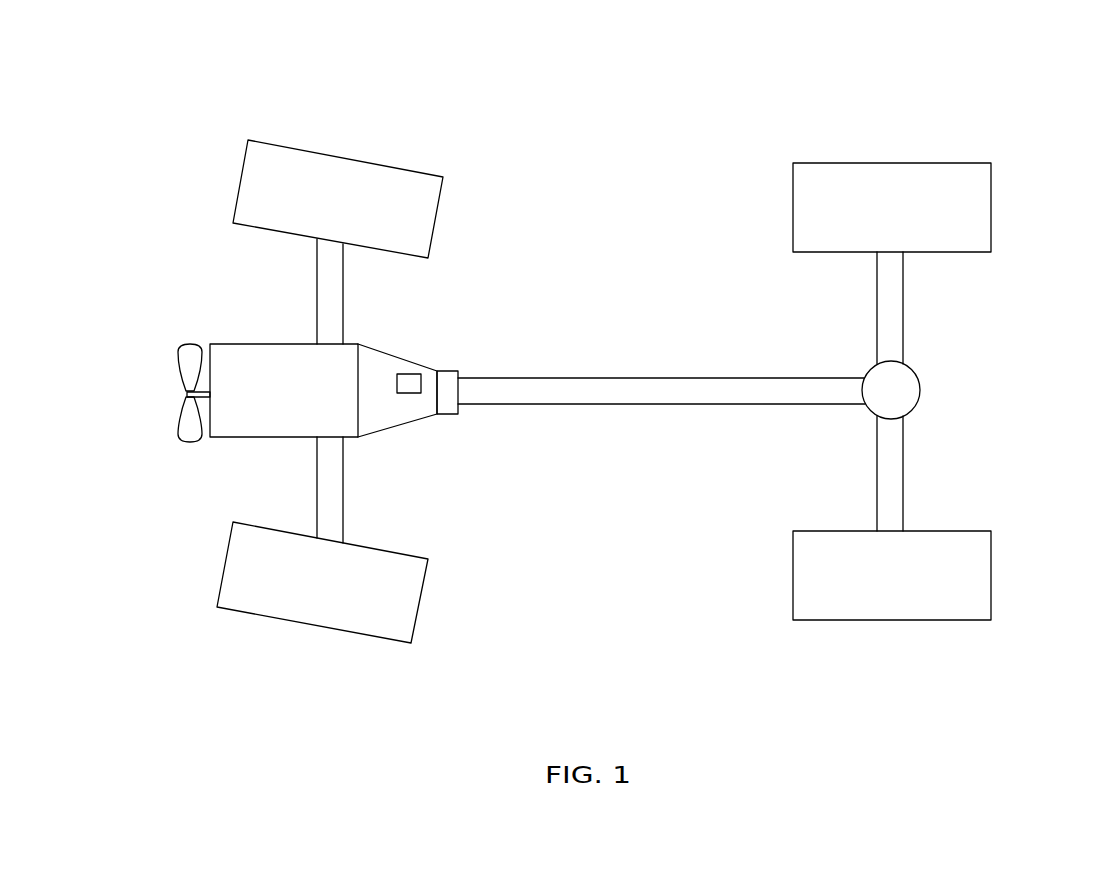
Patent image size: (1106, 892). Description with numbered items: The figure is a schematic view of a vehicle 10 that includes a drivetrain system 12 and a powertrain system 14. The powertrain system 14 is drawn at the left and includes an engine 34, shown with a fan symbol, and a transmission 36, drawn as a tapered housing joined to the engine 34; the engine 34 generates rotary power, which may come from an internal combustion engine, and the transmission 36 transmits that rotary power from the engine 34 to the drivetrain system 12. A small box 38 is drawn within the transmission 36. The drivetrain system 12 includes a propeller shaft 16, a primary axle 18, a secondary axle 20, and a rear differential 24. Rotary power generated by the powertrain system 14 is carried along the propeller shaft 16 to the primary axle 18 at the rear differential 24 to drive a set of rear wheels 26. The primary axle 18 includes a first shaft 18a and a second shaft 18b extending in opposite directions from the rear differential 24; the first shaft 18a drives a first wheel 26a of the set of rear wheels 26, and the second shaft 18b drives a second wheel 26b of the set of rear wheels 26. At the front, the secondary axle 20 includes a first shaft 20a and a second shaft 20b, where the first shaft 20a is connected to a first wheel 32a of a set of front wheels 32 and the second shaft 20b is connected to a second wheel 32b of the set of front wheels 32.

The vehicle 10 is at (658, 138).
The drivetrain system 12 is at (585, 342).
The powertrain system 14 is at (222, 302).
The propeller shaft 16 is at (603, 406).
The primary axle 18 is at (938, 391).
The first shaft 18a is at (905, 297).
The second shaft 18b is at (905, 473).
The secondary axle 20 is at (334, 391).
The first shaft 20a is at (317, 277).
The second shaft 20b is at (317, 495).
The rear differential 24 is at (918, 378).
The set of rear wheels 26 is at (939, 359).
The first wheel 26a is at (915, 163).
The second wheel 26b is at (992, 575).
The set of front wheels 32 is at (375, 387).
The first wheel 32a is at (305, 148).
The second wheel 32b is at (305, 623).
The engine 34 is at (220, 438).
The transmission 36 is at (380, 348).
The controller 38 is at (407, 382).